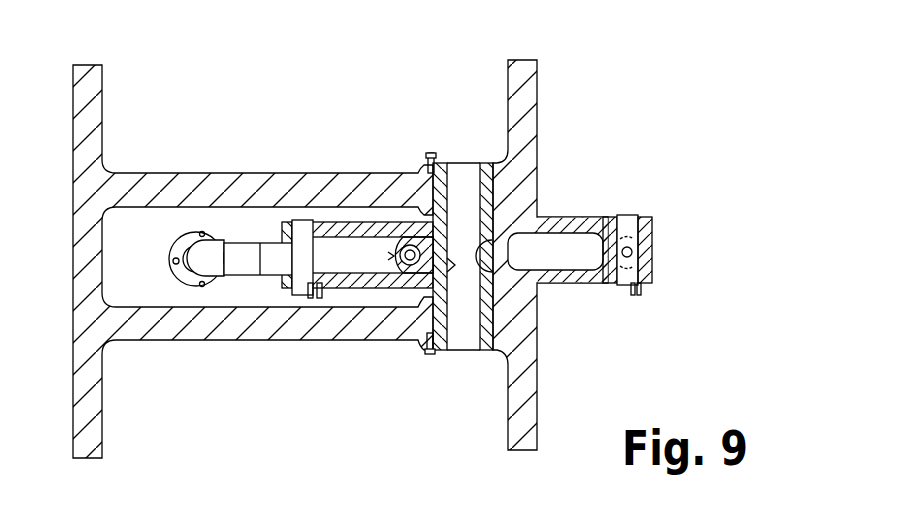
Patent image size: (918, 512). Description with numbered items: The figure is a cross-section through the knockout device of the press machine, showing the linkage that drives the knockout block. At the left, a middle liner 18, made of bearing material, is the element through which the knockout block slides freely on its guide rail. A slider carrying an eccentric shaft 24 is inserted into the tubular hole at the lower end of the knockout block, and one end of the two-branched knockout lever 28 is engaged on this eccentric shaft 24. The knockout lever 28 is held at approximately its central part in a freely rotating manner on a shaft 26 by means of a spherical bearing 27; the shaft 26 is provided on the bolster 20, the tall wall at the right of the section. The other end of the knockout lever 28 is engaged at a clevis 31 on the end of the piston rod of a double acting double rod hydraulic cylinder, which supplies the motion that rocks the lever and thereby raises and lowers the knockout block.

The middle liner 18 is at (190, 284).
The bolster 20 is at (517, 108).
The eccentric shaft 24 is at (303, 232).
The shaft 26 is at (468, 337).
The spherical bearing 27 is at (510, 283).
The knockout lever 28 is at (362, 284).
The clevis 31 is at (628, 218).